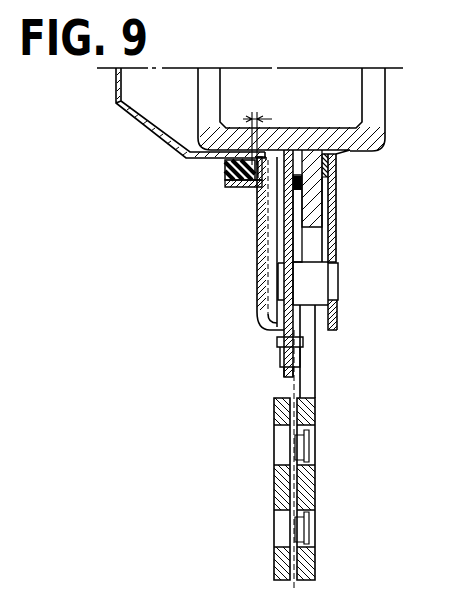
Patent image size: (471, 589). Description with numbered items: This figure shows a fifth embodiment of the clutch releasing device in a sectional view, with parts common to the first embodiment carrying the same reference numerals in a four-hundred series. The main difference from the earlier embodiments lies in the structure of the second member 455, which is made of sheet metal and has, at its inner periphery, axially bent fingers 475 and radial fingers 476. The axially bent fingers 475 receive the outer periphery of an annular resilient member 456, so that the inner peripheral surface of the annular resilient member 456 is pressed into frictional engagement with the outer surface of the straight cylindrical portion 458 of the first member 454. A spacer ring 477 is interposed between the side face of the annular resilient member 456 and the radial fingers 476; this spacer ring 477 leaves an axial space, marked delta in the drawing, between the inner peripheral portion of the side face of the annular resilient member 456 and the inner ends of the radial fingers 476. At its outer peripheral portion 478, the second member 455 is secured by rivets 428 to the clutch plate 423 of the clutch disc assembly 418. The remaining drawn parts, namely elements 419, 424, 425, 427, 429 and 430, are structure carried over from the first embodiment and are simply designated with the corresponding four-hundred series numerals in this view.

The first member 454 is at (141, 128).
The straight cylindrical portion 458 is at (224, 170).
The annular resilient member 456 is at (238, 183).
The axially bent fingers 475 is at (258, 175).
The spacer ring 477 is at (278, 185).
The second member 455 is at (258, 304).
The radial fingers 476 is at (284, 166).
The ring 419 is at (336, 153).
The clutch disc assembly 418 is at (352, 167).
The tube 424 is at (333, 208).
The clutch plate 423 is at (298, 243).
The nut 425 is at (322, 283).
The rivets 428 is at (300, 350).
The outer peripheral portion 478 is at (282, 368).
The left block 429 is at (282, 492).
The bushing 427 is at (304, 465).
The right block 430 is at (307, 498).